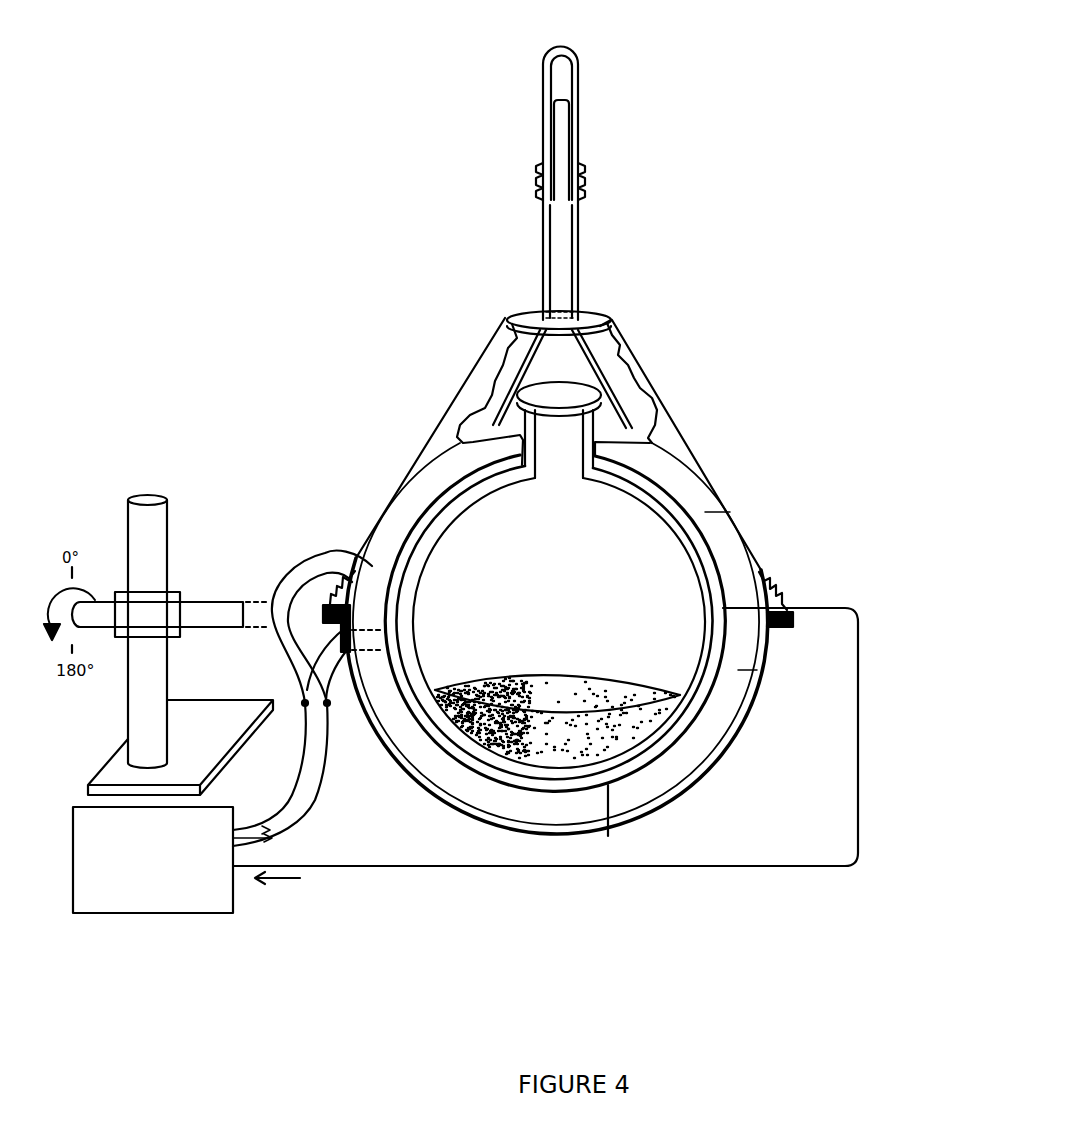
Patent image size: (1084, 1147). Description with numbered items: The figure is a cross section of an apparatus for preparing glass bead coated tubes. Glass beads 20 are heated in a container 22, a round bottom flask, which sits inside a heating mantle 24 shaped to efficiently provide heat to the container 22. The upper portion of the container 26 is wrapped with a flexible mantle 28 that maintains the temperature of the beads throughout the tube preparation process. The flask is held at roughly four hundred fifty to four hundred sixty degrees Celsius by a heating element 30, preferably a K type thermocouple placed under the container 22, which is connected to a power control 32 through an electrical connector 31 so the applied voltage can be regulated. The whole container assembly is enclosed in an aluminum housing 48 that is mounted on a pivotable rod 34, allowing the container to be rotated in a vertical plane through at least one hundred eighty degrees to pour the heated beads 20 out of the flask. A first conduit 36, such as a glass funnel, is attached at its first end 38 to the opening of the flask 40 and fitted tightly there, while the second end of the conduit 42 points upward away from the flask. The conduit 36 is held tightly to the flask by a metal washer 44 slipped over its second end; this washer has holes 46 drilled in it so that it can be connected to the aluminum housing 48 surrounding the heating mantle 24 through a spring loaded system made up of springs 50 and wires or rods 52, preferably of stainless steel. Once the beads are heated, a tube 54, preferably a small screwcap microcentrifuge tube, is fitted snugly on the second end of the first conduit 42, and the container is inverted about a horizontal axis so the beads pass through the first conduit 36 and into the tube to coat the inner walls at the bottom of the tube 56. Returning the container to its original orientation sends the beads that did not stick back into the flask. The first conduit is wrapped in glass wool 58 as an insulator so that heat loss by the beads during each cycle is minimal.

The glass beads 20 is at (598, 695).
The container 22 is at (688, 540).
The heating mantle 24 is at (737, 558).
The upper portion of the container 26 is at (660, 505).
The flexible mantle 28 is at (693, 485).
The heating element 30 is at (633, 768).
The electrical connector 31 is at (284, 587).
The power control 32 is at (173, 913).
The pivotable rod 34 is at (208, 600).
The first conduit 36 is at (583, 240).
The first end 38 is at (512, 405).
The opening of the flask 40 is at (523, 388).
The second end of the conduit 42 is at (575, 100).
The metal washer 44 is at (592, 313).
The holes 46 is at (606, 322).
The aluminum housing 48 is at (800, 610).
The springs 50 is at (785, 578).
The wires or rods 52 is at (677, 428).
The tube 54 is at (580, 127).
The bottom of the tube 56 is at (577, 53).
The glass wool 58 is at (650, 376).